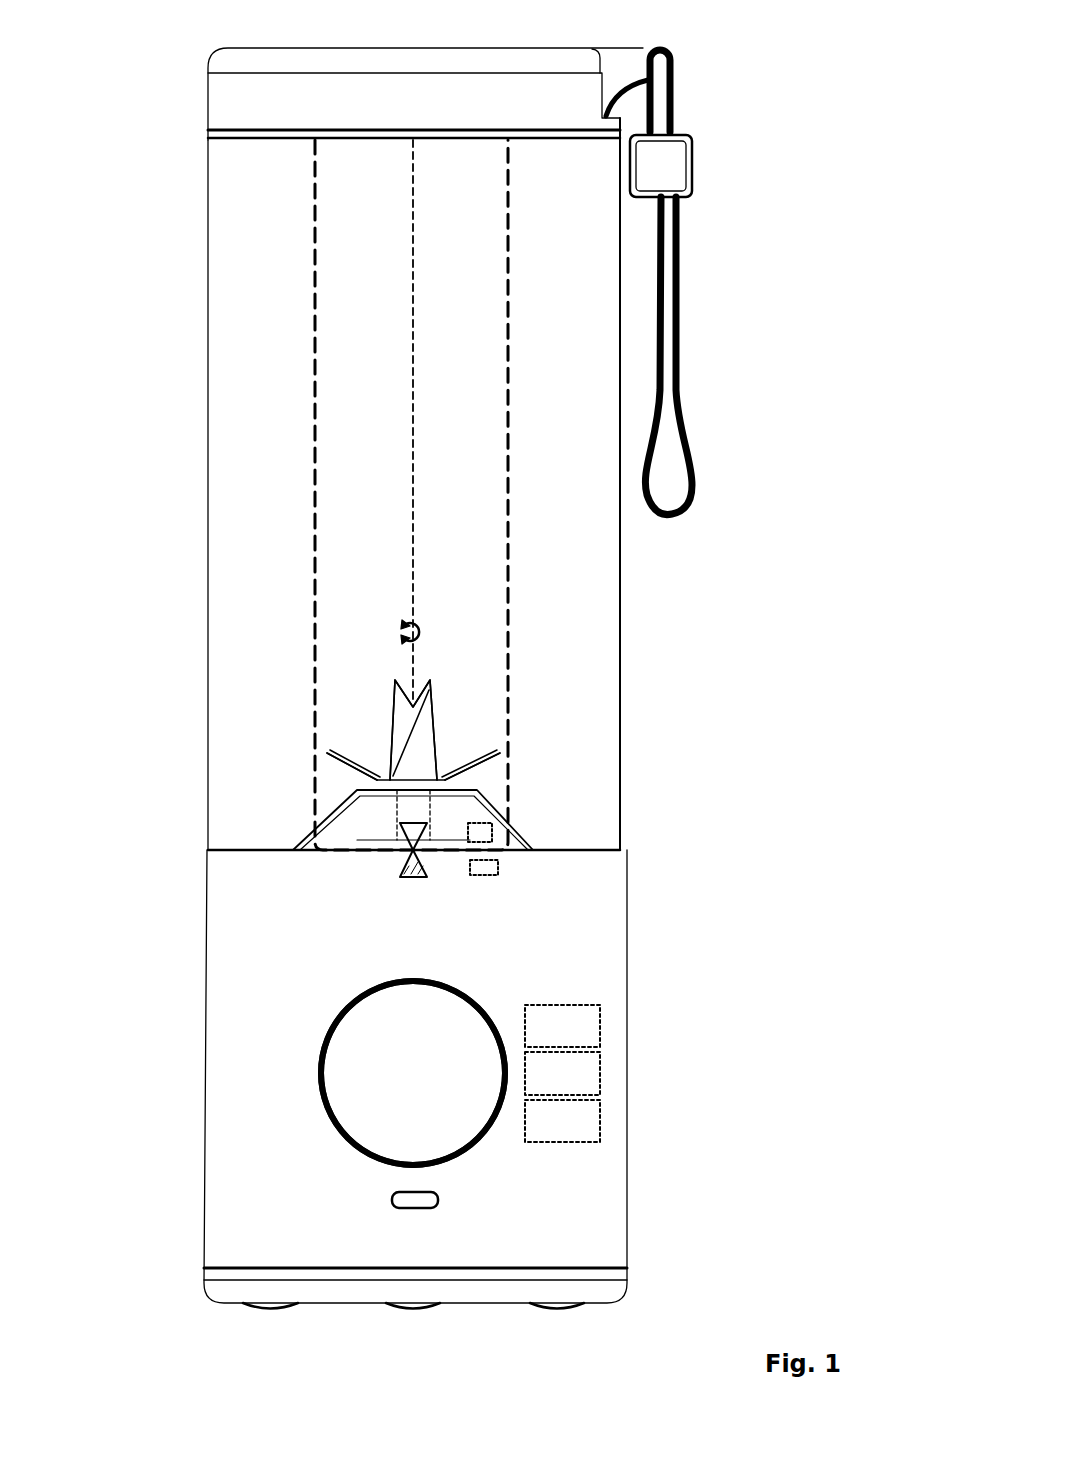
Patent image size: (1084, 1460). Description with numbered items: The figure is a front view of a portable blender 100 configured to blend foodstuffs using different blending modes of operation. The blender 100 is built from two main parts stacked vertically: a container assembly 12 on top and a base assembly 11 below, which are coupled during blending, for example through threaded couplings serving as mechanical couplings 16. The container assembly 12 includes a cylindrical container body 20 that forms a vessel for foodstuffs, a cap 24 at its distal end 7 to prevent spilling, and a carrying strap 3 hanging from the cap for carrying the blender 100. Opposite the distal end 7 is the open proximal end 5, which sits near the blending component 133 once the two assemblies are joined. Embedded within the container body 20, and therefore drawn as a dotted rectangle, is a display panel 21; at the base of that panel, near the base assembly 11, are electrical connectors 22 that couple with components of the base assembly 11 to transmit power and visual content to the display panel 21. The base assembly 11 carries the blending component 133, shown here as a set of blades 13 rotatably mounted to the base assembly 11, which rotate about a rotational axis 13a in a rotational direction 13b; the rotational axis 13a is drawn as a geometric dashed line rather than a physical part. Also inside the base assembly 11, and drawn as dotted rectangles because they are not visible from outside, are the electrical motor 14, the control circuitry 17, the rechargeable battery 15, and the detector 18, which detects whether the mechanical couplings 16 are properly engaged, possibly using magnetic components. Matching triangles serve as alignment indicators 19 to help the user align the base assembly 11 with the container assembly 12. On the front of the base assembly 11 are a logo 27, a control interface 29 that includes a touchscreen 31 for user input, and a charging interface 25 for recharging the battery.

The blender 100 is at (792, 76).
The container assembly 12 is at (195, 848).
The base assembly 11 is at (193, 1313).
The cap 24 is at (455, 46).
The distal end 7 is at (555, 147).
The display panel 21 is at (485, 283).
The carrying strap 3 is at (690, 498).
The container body 20 is at (571, 547).
The rotational axis 13a is at (415, 596).
The rotational direction 13b is at (422, 632).
The blending component 133 is at (503, 755).
The set of blades 13 is at (603, 730).
The electrical connectors 22 is at (505, 833).
The proximal end 5 is at (563, 850).
The mechanical couplings 16 is at (618, 850).
The detector 18 is at (498, 875).
The alignment indicators 19 is at (437, 882).
The logo 27 is at (512, 960).
The electrical motor 14 is at (600, 1020).
The control circuitry 17 is at (600, 1068).
The rechargeable battery 15 is at (600, 1118).
The control interface 29 is at (467, 1153).
The touchscreen 31 is at (430, 1138).
The charging interface 25 is at (440, 1200).